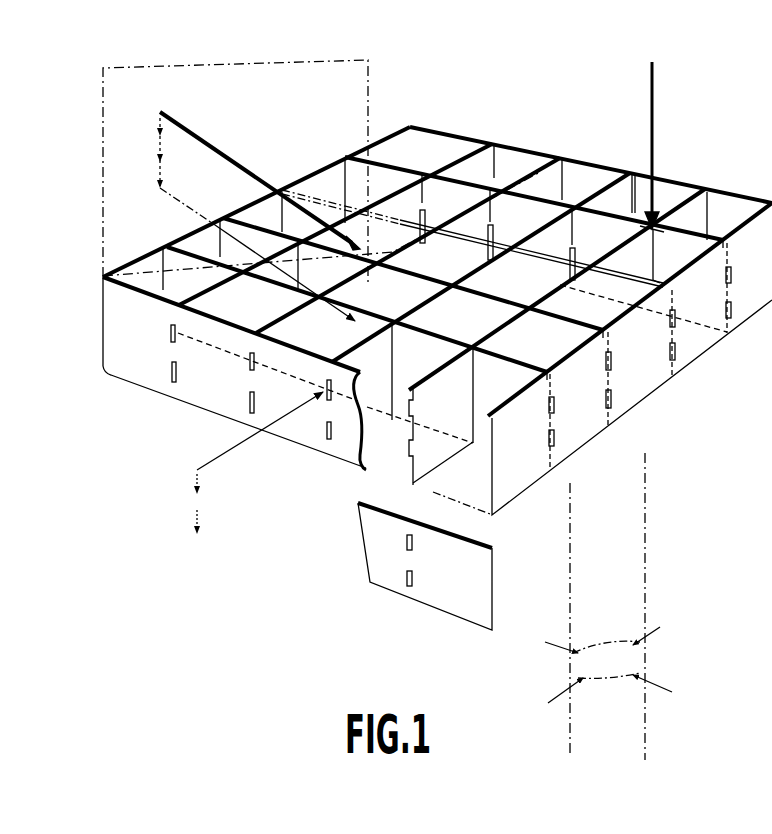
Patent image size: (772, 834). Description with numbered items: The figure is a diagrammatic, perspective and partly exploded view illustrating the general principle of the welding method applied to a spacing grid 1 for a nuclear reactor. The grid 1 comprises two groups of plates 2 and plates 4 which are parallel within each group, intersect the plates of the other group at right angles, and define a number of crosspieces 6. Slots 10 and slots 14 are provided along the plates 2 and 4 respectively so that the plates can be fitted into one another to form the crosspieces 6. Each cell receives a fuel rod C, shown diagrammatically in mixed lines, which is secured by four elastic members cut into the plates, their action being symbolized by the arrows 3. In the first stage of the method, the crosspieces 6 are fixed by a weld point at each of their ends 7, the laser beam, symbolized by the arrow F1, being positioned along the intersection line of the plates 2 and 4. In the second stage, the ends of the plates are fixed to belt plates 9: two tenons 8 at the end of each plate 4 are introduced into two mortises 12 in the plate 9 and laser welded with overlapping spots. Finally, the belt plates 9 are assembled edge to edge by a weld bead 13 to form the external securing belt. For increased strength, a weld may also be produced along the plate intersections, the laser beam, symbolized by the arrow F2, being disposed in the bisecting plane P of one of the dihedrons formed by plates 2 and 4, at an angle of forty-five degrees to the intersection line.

The grid 1 is at (432, 92).
The plates 2 is at (688, 234).
The arrows 3 is at (640, 633).
The plates 4 is at (477, 255).
The crosspieces 6 is at (658, 239).
The ends 7 is at (637, 218).
The tenons 8 is at (412, 452).
The belt plates 9 is at (301, 175).
The slots 10 is at (515, 232).
The mortises 12 is at (407, 543).
The weld bead 13 is at (492, 497).
The slots 14 is at (428, 188).
The bisecting plane P is at (367, 76).
The fuel rod C is at (645, 577).
The laser beam arrow F1 is at (666, 81).
The laser beam arrow F2 is at (162, 114).